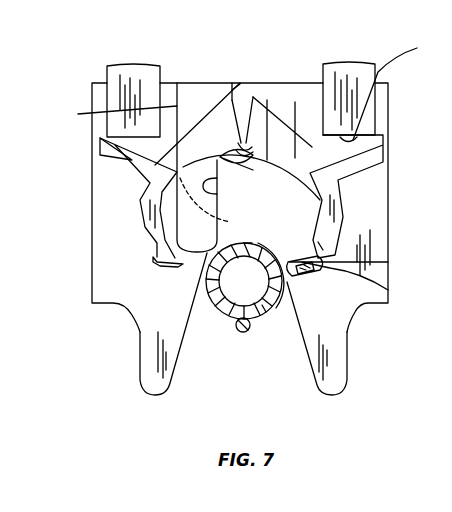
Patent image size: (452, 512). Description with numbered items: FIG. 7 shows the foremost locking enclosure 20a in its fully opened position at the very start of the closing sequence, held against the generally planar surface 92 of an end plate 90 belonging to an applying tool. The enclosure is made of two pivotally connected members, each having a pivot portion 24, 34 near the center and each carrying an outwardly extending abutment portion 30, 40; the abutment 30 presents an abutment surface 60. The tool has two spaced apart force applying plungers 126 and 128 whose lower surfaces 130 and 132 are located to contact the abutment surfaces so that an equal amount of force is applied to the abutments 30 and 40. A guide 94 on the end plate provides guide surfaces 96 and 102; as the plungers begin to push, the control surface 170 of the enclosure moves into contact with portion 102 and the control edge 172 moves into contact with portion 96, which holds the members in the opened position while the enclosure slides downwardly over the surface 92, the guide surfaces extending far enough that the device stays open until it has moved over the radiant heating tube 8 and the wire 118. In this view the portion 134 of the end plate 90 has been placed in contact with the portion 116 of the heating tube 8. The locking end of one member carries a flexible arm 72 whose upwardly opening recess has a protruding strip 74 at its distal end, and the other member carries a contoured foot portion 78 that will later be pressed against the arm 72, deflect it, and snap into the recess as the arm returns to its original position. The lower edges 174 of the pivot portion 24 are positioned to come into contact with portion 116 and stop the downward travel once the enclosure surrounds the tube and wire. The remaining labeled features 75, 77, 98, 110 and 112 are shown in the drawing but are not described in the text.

The radiant heating tube 8 is at (264, 308).
The locking enclosure 20a is at (120, 221).
The pivot portion 24 is at (282, 138).
The abutment portion 30 is at (362, 167).
The pivot portion 34 is at (226, 139).
The abutment portion 40 is at (120, 165).
The abutment surface 60 is at (451, 165).
The flexible arm 72 is at (298, 282).
The protruding strip 74 is at (320, 242).
The tab edge 75 is at (388, 292).
The tab surface 77 is at (388, 262).
The foot portion 78 is at (166, 268).
The end plate 90 is at (100, 251).
The generally planar surface 92 is at (134, 278).
The guide 94 is at (197, 97).
The guide surface 96 is at (451, 113).
The top surface 98 is at (293, 83).
The guide surface 102 is at (232, 90).
The left leg 110 is at (155, 358).
The right leg 112 is at (346, 358).
The portion of radiant heating tube 116 is at (245, 281).
The wire 118 is at (244, 333).
The force applying plunger 126 is at (133, 72).
The force applying plunger 128 is at (347, 72).
The lower surface 130 is at (100, 160).
The lower surface 132 is at (402, 87).
The portion of end plate 134 is at (253, 243).
The control surface 170 is at (215, 192).
The control edge 172 is at (228, 219).
The lower edges 174 is at (242, 170).